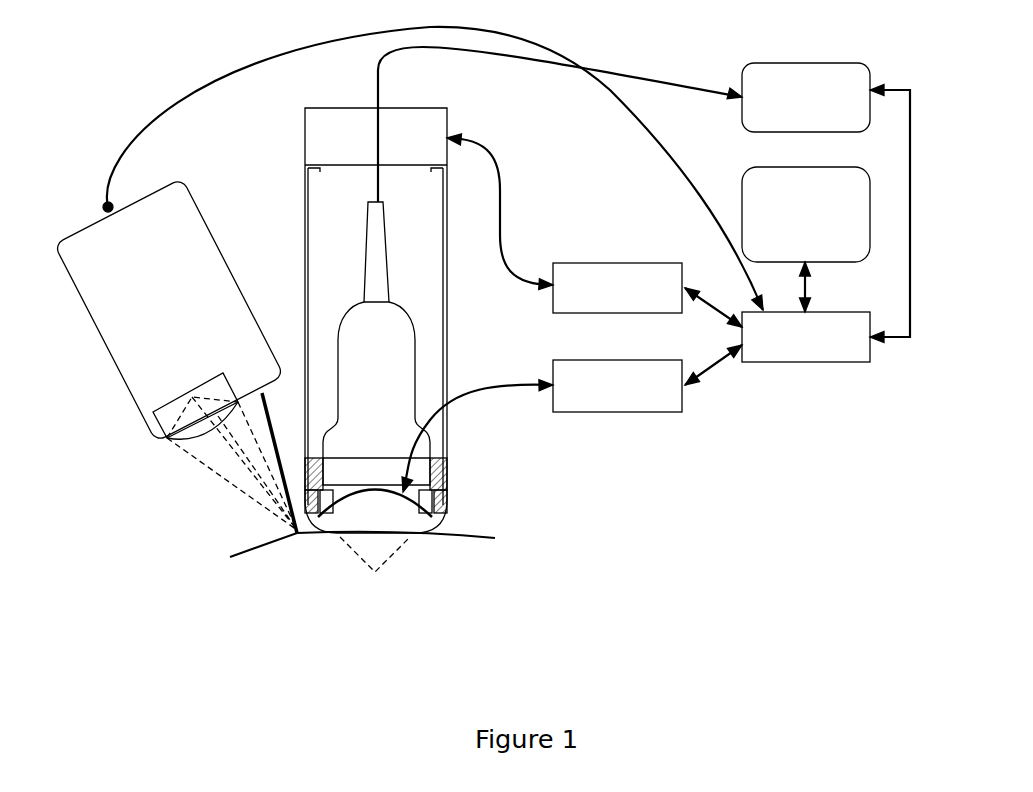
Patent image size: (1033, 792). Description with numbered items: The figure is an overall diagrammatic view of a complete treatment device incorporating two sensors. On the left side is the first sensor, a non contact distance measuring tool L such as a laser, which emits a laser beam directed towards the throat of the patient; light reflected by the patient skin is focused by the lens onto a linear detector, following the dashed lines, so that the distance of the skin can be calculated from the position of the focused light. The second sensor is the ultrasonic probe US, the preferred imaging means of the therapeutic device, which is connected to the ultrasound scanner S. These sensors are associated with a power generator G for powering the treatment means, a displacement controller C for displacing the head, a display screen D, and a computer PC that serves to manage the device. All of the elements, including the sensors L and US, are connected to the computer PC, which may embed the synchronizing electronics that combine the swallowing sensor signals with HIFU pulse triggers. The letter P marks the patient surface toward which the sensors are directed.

The non contact distance measuring tool L is at (408, 280).
The ultrasonic probe US is at (523, 309).
The patient tissue surface P is at (373, 544).
The ultrasound scanner S is at (826, 203).
The display screen D is at (806, 239).
The computer PC is at (777, 336).
The displacement controller C is at (617, 288).
The power generator G is at (617, 386).